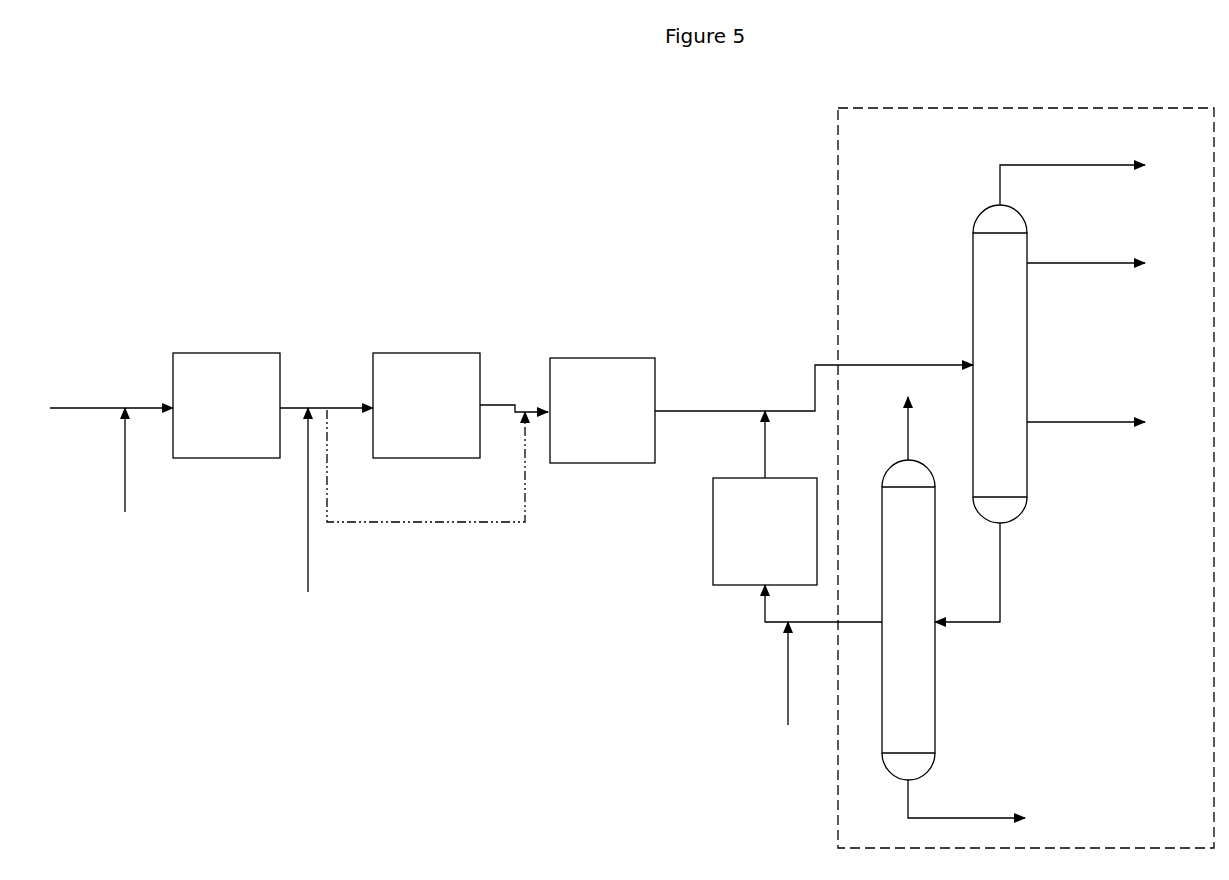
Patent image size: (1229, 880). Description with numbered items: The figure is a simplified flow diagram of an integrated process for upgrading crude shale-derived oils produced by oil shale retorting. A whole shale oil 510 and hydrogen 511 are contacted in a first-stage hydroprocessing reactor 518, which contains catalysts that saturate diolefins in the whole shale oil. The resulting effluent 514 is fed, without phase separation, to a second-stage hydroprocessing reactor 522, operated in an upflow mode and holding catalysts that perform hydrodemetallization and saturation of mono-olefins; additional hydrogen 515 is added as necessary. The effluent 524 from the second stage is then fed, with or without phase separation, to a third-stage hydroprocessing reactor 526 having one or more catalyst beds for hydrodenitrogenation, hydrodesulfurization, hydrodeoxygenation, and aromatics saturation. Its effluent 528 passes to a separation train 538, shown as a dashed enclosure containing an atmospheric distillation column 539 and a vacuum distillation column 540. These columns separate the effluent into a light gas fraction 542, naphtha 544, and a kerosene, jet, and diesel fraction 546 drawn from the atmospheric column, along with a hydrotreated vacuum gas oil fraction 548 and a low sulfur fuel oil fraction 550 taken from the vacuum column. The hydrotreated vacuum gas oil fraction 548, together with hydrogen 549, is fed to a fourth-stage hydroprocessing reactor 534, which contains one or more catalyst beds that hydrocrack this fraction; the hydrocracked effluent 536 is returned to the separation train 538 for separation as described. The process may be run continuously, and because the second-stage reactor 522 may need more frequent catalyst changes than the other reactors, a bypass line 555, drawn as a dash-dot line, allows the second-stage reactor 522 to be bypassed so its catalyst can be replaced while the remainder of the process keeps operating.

The whole shale oil 510 is at (90, 407).
The hydrogen 511 is at (118, 490).
The effluent 514 is at (320, 407).
The additional hydrogen 515 is at (306, 572).
The first-stage hydroprocessing reactor 518 is at (226, 405).
The second-stage hydroprocessing reactor 522 is at (426, 405).
The effluent 524 is at (504, 404).
The third-stage hydroprocessing reactor 526 is at (602, 410).
The effluent 528 is at (696, 409).
The fourth-stage hydroprocessing reactor 534 is at (765, 531).
The effluent 536 is at (752, 463).
The separation train 538 is at (830, 236).
The atmospheric distillation column 539 is at (980, 212).
The vacuum distillation column 540 is at (896, 465).
The light gas fraction 542 is at (1066, 164).
The naphtha 544 is at (1091, 262).
The kerosene, jet, and diesel fraction 546 is at (1093, 421).
The hydrotreated vacuum gas oil fraction 548 is at (828, 620).
The hydrogen 549 is at (812, 690).
The low sulfur fuel oil fraction 550 is at (973, 817).
The bypass line 555 is at (426, 520).